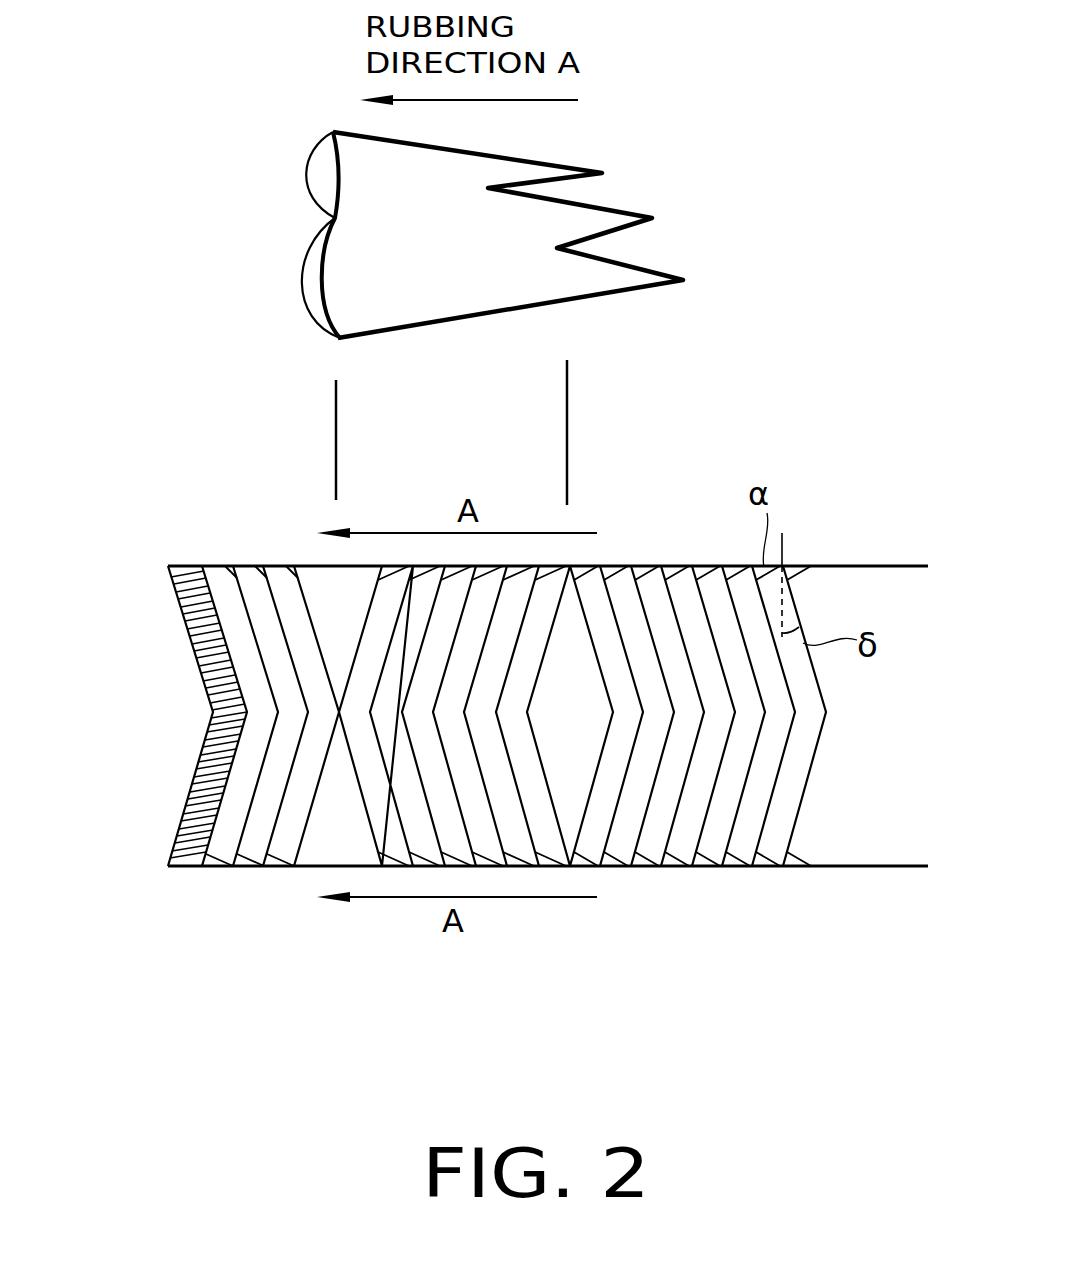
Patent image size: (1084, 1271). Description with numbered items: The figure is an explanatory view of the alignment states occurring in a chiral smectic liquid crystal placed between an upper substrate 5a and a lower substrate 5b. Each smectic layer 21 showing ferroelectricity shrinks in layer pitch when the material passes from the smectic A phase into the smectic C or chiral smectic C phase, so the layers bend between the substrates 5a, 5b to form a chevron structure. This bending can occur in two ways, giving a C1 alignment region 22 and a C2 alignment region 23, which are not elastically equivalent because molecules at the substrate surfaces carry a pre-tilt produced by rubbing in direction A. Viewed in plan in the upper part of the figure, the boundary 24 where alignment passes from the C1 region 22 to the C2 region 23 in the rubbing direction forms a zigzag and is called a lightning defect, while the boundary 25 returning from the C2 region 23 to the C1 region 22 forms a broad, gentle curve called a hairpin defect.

The upper substrate 5a is at (898, 566).
The lower substrate 5b is at (865, 867).
The smectic layer 21 is at (800, 763).
The C1 alignment region 22 is at (323, 950).
The C2 alignment region 23 is at (570, 950).
The lightning defect 24 is at (540, 160).
The hairpin defect 25 is at (323, 566).